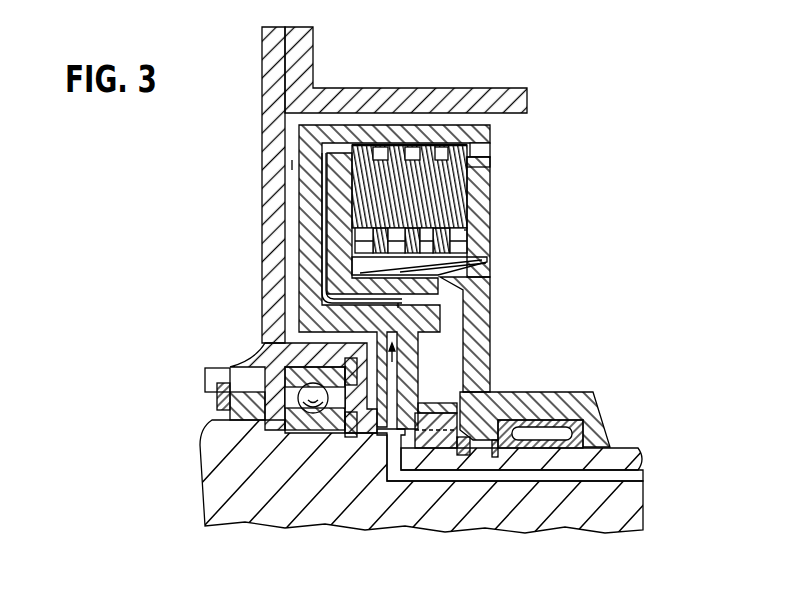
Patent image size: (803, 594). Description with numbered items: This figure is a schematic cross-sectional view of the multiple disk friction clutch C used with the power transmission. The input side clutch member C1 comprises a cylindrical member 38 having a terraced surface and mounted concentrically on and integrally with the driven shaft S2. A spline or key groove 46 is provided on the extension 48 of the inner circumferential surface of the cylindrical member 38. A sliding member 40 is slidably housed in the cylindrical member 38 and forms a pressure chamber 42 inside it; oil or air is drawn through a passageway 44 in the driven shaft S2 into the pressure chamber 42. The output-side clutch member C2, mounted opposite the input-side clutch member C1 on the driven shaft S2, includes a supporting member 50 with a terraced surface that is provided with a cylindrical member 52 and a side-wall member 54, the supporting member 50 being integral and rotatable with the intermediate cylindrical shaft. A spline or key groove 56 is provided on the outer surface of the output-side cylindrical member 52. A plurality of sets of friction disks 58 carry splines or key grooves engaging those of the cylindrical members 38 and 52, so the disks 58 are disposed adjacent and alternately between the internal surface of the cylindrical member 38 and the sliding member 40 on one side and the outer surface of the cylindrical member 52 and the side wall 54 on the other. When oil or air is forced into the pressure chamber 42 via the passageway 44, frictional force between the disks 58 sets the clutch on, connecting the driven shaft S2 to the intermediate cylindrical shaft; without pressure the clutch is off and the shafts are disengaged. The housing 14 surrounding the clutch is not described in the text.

The housing 14 is at (263, 345).
The cylindrical member 38 is at (302, 135).
The sliding member 40 is at (340, 200).
The pressure chamber 42 is at (323, 290).
The passageway 44 is at (650, 477).
The spline or key groove 46 is at (440, 132).
The extension 48 is at (487, 135).
The supporting member 50 is at (490, 332).
The cylindrical member 52 is at (455, 258).
The side-wall member 54 is at (470, 208).
The spline or key groove 56 is at (463, 248).
The friction disks 58 is at (470, 176).
The multiple disk friction clutch C is at (642, 160).
The input side clutch member C1 is at (295, 165).
The output-side clutch member C2 is at (489, 235).
The driven shaft S2 is at (228, 440).